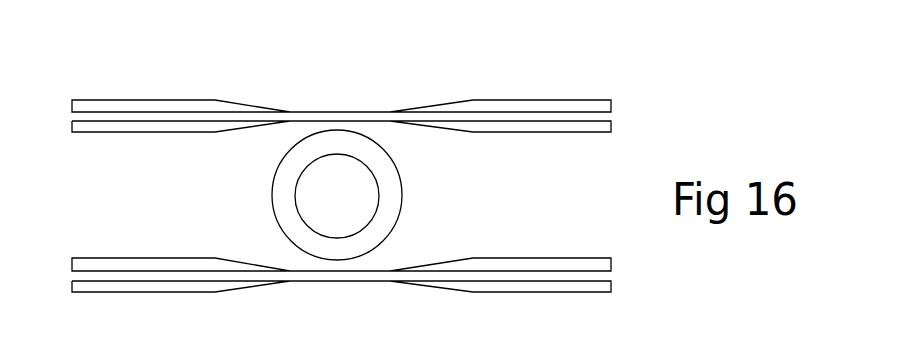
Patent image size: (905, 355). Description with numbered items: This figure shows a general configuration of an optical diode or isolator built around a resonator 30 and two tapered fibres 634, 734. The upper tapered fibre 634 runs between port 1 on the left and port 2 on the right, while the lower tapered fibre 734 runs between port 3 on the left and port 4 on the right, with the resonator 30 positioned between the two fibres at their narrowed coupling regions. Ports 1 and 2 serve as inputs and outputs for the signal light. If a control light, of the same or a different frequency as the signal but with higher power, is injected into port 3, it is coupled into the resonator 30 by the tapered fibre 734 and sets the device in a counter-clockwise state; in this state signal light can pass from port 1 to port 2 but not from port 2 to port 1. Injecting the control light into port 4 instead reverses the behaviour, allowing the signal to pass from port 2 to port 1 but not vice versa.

The port 1 is at (143, 99).
The port 2 is at (542, 99).
The port 3 is at (143, 293).
The port 4 is at (542, 294).
The tapered fibre 634 is at (325, 117).
The tapered fibre 734 is at (338, 275).
The resonator 30 is at (376, 200).